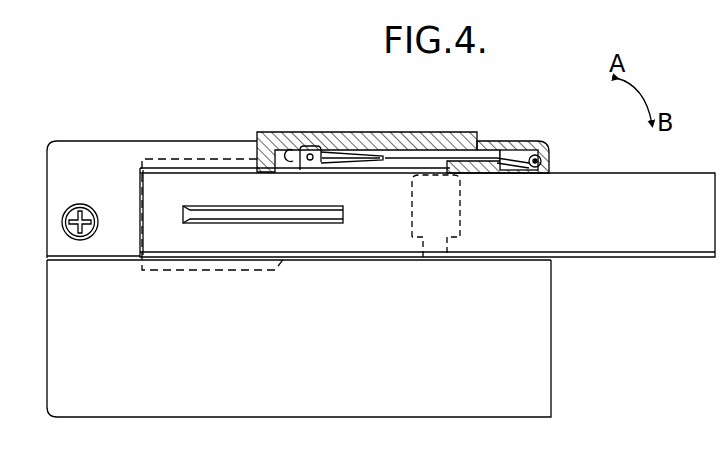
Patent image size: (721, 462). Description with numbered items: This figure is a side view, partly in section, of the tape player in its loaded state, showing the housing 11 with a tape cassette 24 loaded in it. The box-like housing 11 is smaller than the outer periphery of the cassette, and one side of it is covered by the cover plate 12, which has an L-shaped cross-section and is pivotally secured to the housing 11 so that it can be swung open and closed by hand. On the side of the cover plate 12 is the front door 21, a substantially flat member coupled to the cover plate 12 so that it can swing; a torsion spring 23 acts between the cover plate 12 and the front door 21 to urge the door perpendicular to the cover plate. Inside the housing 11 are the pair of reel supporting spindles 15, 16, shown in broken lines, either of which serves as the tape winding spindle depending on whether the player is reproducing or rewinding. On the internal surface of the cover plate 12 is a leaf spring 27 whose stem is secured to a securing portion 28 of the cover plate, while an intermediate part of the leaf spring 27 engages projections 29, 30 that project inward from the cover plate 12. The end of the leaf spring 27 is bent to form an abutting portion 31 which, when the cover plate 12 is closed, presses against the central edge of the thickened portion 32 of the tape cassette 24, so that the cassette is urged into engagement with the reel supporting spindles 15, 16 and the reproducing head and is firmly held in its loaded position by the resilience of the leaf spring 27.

The housing 11 is at (551, 352).
The cover plate 12 is at (78, 141).
The reel supporting spindle 15 is at (487, 216).
The reel supporting spindle 16 is at (461, 205).
The front door 21 is at (490, 140).
The torsion spring 23 is at (548, 147).
The tape cassette 24 is at (611, 173).
The leaf spring 27 is at (310, 146).
The securing portion 28 is at (388, 148).
The projection 29 is at (311, 171).
The projection 30 is at (340, 160).
The abutting portion 31 is at (253, 145).
The thickened portion 32 is at (168, 159).